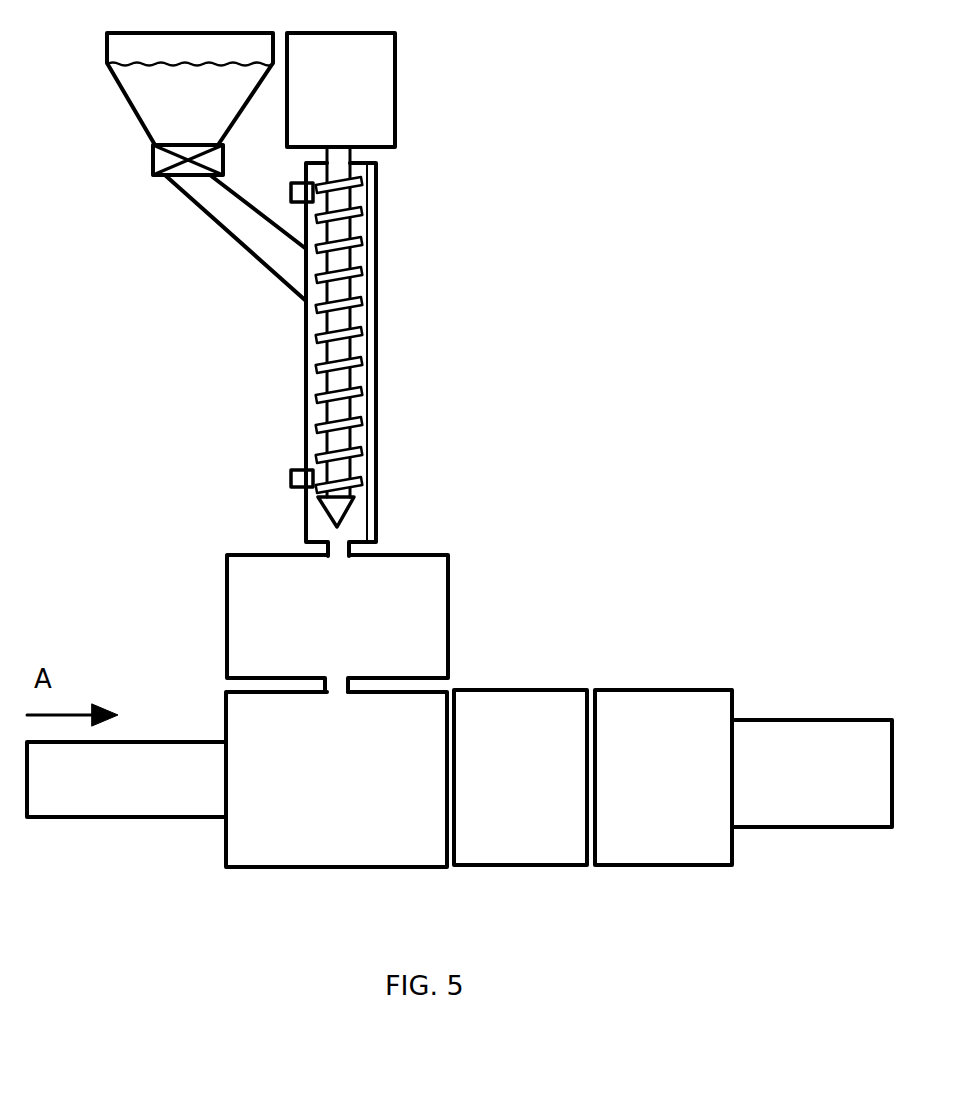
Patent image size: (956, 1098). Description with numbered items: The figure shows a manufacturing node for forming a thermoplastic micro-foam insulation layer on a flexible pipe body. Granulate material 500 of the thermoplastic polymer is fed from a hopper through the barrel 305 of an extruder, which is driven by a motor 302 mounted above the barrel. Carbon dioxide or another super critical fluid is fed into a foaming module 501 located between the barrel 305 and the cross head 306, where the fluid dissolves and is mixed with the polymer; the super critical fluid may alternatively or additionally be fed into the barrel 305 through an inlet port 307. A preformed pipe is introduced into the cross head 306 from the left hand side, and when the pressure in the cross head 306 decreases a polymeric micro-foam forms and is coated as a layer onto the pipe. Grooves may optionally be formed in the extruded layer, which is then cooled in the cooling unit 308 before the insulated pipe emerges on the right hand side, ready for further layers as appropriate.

The granulate material 500 is at (197, 120).
The motor 302 is at (352, 99).
The barrel 305 is at (379, 283).
The inlet port 307 is at (283, 479).
The foaming module 501 is at (449, 612).
The cross head 306 is at (337, 848).
The cooling unit 308 is at (668, 850).